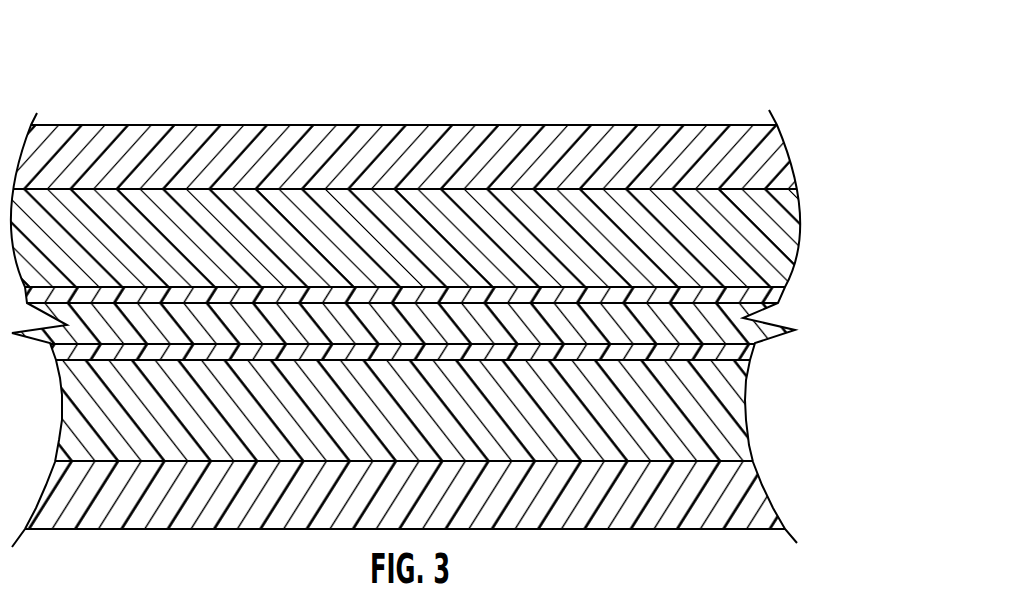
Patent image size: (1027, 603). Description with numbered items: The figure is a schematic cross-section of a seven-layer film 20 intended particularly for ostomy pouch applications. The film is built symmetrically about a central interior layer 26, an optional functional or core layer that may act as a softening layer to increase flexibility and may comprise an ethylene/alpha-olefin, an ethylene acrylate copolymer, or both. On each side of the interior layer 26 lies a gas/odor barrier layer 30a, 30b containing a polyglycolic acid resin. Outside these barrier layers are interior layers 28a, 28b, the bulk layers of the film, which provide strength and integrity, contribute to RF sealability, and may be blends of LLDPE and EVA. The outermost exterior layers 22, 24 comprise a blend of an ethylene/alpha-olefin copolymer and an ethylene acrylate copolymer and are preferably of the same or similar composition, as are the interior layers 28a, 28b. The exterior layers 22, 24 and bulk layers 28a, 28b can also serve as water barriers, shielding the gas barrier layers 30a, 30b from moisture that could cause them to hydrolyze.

The seven-layer film 20 is at (713, 101).
The exterior layer 22 is at (775, 157).
The exterior layer 24 is at (760, 508).
The interior layer 26 is at (745, 320).
The interior layer 28a is at (770, 243).
The interior layer 28b is at (735, 427).
The gas/odor barrier layer 30a is at (777, 295).
The gas/odor barrier layer 30b is at (755, 352).